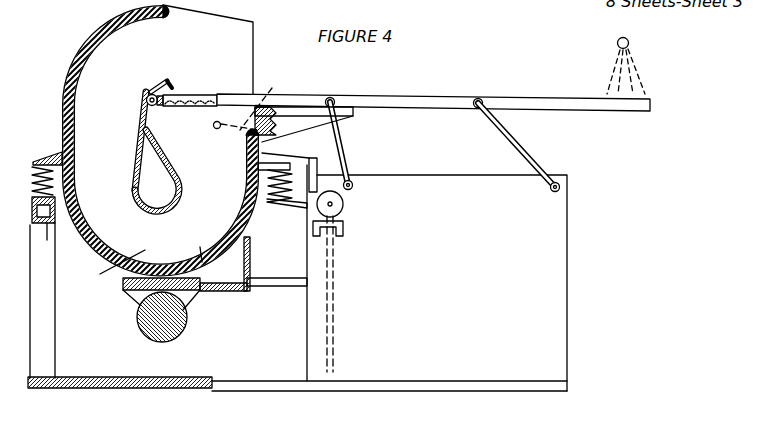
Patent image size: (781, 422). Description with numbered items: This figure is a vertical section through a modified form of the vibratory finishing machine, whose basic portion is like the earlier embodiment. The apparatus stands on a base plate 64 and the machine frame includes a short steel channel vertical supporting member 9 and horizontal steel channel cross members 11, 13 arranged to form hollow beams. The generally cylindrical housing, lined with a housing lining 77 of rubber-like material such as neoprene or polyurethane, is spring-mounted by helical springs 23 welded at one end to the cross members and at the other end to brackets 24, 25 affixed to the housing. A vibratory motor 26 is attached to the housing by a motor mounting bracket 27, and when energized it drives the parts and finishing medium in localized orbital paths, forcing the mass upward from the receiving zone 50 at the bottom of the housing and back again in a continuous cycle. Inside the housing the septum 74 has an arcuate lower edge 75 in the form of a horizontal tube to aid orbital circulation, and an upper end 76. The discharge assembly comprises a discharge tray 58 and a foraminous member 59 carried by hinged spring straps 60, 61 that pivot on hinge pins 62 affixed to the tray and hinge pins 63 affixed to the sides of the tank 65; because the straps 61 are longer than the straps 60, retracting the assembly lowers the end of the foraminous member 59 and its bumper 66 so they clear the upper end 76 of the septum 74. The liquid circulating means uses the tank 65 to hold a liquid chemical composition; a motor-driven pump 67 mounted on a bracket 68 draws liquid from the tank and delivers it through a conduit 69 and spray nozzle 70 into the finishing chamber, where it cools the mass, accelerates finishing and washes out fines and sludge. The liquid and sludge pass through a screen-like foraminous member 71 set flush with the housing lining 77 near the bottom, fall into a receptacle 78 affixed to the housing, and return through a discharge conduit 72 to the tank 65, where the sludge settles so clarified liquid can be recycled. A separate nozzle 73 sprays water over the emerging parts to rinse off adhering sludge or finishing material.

The vertical supporting member 9 is at (55, 350).
The horizontal cross member 11 is at (31, 211).
The horizontal cross member 13 is at (48, 230).
The helical spring 23 is at (31, 178).
The bracket 24 is at (49, 151).
The bracket 25 is at (302, 208).
The vibratory motor 26 is at (153, 326).
The motor mounting bracket 27 is at (135, 300).
The receiving zone 50 is at (108, 272).
The discharge tray 58 is at (652, 106).
The foraminous member 59 is at (197, 95).
The hinged spring strap 60 is at (350, 152).
The hinged spring strap 61 is at (530, 150).
The hinge pin 62 is at (330, 97).
The hinge pin 63 is at (356, 186).
The base plate 64 is at (224, 381).
The tank 65 is at (478, 285).
The bumper 66 is at (160, 106).
The motor-driven pump 67 is at (335, 206).
The bracket 68 is at (341, 234).
The conduit 69 is at (262, 99).
The spray nozzle 70 is at (215, 129).
The foraminous member 71 is at (232, 240).
The discharge conduit 72 is at (276, 288).
The nozzle 73 is at (630, 42).
The septum 74 is at (138, 118).
The arcuate lower edge 75 is at (182, 195).
The upper end 76 is at (157, 90).
The housing lining 77 is at (92, 250).
The receptacle 78 is at (250, 250).